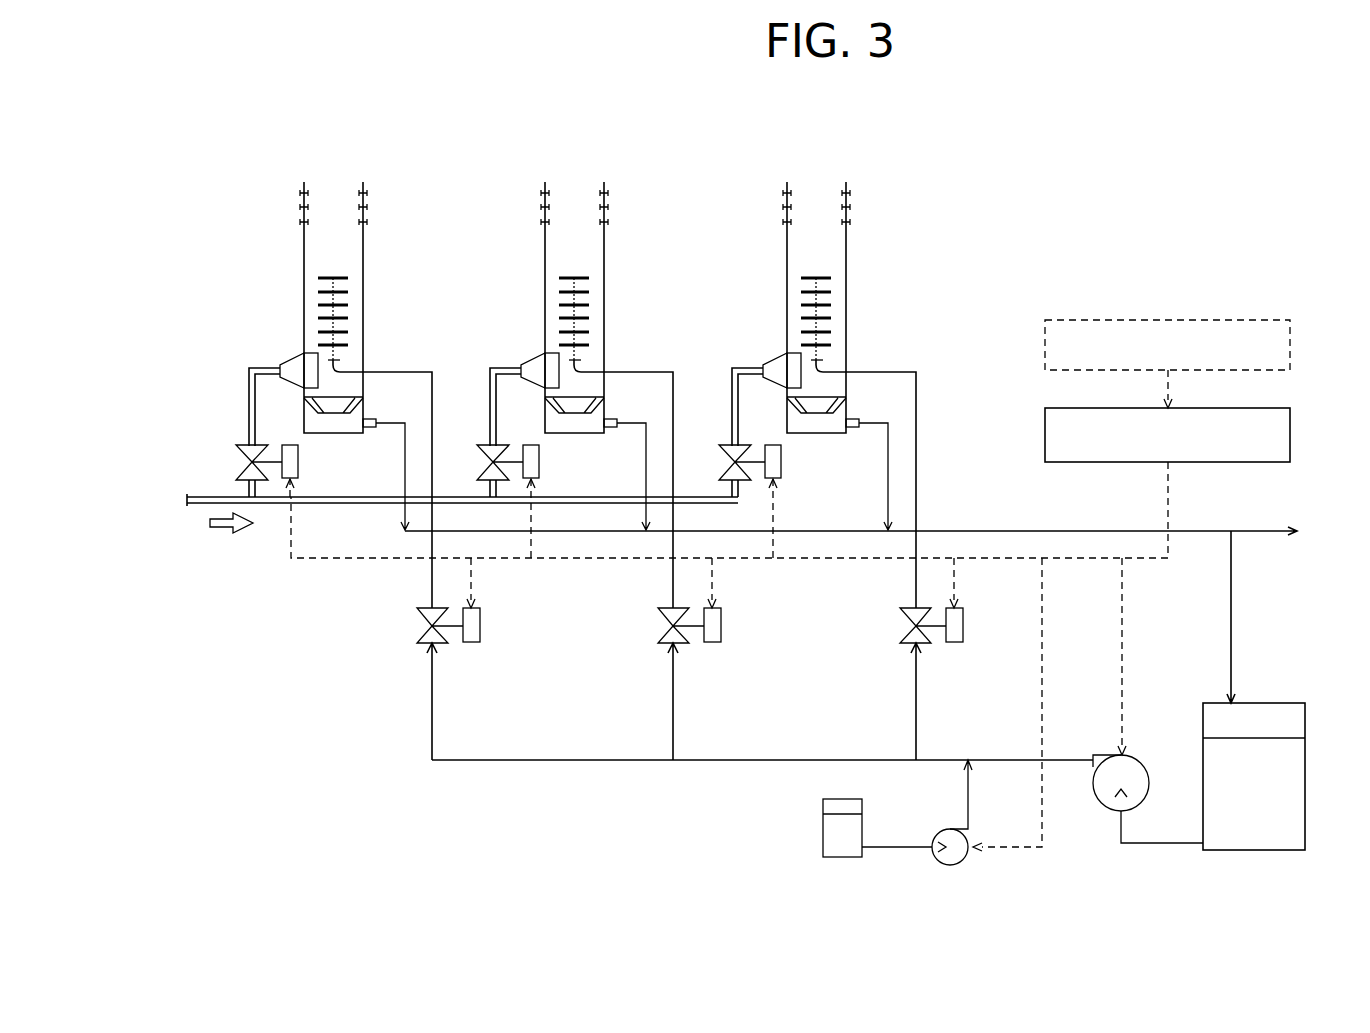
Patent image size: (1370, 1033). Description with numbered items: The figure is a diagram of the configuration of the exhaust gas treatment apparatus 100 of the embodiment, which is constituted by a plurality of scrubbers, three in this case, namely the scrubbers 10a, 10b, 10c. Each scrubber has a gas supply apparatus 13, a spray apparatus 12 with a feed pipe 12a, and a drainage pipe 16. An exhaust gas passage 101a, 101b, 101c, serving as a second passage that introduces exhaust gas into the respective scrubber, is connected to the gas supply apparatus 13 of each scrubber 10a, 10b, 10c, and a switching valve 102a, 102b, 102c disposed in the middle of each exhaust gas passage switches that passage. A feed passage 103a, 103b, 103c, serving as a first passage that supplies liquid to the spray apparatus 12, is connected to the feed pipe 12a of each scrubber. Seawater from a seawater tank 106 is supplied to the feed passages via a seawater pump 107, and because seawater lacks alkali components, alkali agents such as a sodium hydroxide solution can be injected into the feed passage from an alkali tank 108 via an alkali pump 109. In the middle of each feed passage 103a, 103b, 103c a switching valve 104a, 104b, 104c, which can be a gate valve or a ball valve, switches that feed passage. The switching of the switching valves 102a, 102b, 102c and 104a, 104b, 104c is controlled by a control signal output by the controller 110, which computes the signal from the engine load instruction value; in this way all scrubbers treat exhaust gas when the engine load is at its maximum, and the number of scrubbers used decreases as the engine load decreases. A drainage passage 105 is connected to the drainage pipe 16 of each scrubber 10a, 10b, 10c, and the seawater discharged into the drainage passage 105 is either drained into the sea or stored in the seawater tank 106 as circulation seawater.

The exhaust gas treatment apparatus 100 is at (238, 152).
The scrubber 10a is at (351, 180).
The scrubber 10b is at (592, 180).
The scrubber 10c is at (834, 180).
The spray apparatus 12 is at (350, 270).
The feed pipe 12a is at (377, 369).
The gas supply apparatus 13 is at (313, 355).
The drainage pipe 16 is at (378, 420).
The exhaust gas passage 101a is at (250, 395).
The exhaust gas passage 101b is at (492, 385).
The exhaust gas passage 101c is at (735, 388).
The switching valve 102a is at (241, 450).
The switching valve 102b is at (490, 448).
The switching valve 102c is at (732, 448).
The feed passage 103a is at (432, 698).
The feed passage 103b is at (673, 698).
The feed passage 103c is at (916, 698).
The switching valve 104a is at (430, 628).
The switching valve 104b is at (671, 628).
The switching valve 104c is at (913, 628).
The drainage passage 105 is at (972, 530).
The seawater tank 106 is at (1272, 708).
The seawater pump 107 is at (1133, 775).
The alkali tank 108 is at (851, 810).
The alkali pump 109 is at (960, 852).
The controller 110 is at (1235, 408).